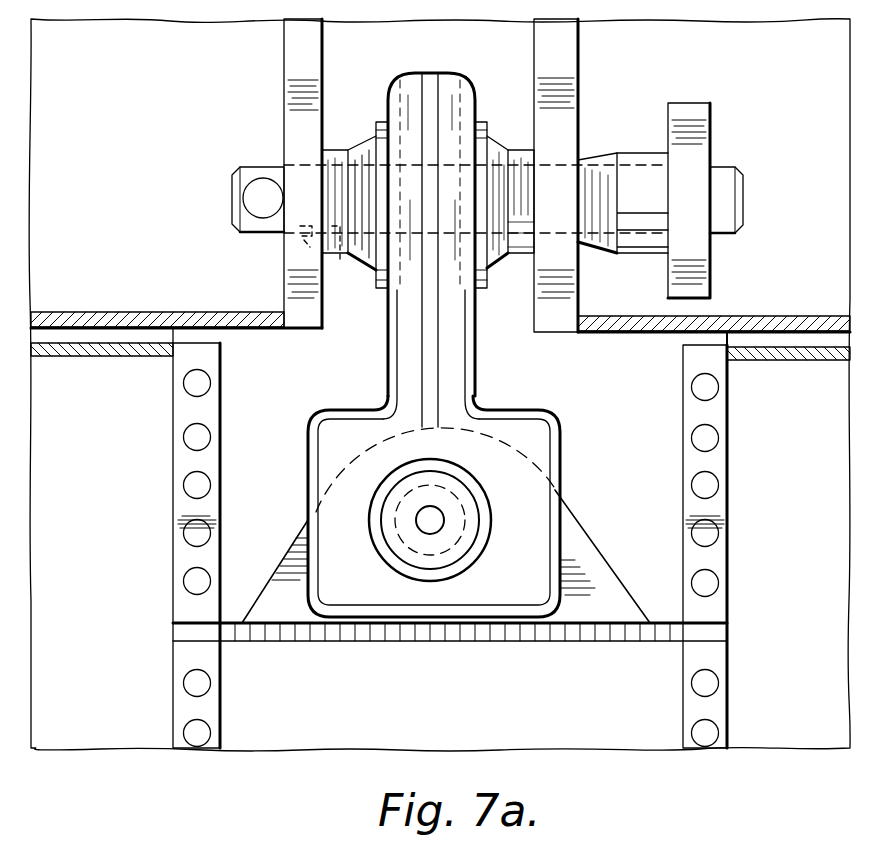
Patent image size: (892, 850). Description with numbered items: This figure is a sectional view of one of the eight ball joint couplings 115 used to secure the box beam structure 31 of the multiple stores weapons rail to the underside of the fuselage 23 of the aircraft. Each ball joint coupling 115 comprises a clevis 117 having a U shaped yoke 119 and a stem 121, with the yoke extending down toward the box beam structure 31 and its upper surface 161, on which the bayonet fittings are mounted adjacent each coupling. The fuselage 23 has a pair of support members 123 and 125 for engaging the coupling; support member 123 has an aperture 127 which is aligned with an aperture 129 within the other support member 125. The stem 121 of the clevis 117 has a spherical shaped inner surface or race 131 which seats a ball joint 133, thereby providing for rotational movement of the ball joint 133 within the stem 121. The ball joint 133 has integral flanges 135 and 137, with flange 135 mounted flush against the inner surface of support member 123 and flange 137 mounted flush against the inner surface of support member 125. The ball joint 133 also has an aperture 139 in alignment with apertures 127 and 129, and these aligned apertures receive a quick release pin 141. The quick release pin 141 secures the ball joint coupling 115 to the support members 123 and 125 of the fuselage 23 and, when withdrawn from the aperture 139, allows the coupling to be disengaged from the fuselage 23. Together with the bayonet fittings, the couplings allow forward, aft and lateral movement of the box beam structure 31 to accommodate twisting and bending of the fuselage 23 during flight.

The fuselage 23 is at (720, 82).
The box beam structure 31 is at (437, 641).
The ball joint coupling 115 is at (578, 425).
The clevis 117 is at (457, 456).
The U shaped yoke 119 is at (308, 485).
The stem 121 is at (386, 367).
The support member 123 is at (580, 58).
The support member 125 is at (284, 108).
The aperture 127 is at (587, 266).
The aperture 129 is at (300, 246).
The spherical shaped inner surface/race 131 is at (376, 280).
The ball joint 133 is at (504, 258).
The flange 135 is at (523, 256).
The flange 137 is at (333, 143).
The aperture 139 is at (300, 279).
The quick release pin 141 is at (712, 267).
The upper surface 161 is at (817, 361).